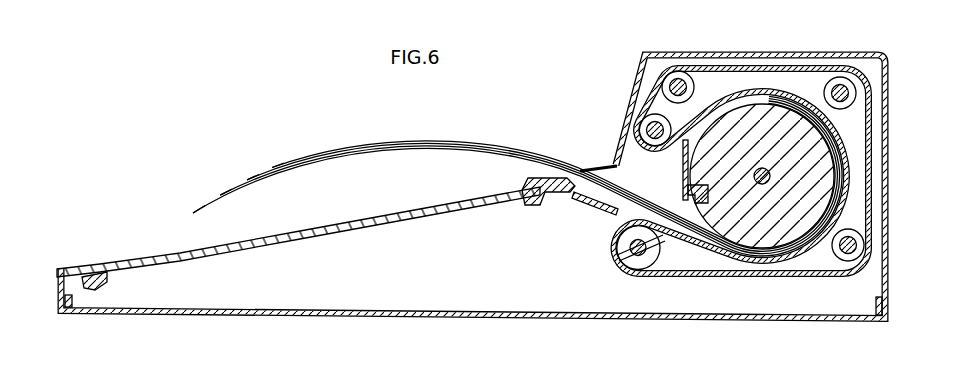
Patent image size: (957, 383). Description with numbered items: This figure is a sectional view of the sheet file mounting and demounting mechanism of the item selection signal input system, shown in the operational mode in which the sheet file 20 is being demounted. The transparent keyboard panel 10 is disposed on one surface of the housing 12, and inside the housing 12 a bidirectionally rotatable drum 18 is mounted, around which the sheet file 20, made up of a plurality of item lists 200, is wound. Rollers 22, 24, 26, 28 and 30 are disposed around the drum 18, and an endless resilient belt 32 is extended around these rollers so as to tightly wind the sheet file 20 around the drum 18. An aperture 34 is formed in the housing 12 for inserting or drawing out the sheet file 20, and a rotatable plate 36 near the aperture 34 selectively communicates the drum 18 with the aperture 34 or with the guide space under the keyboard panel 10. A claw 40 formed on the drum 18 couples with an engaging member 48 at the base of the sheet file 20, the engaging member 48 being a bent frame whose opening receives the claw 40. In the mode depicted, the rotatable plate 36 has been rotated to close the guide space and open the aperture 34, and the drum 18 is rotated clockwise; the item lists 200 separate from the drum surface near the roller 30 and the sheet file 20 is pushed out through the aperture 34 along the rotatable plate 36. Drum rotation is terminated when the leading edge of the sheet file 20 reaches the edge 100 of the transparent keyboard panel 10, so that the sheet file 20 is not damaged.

The transparent keyboard panel 10 is at (376, 218).
The housing 12 is at (77, 267).
The edge of the transparent keyboard panel 100 is at (108, 270).
The item lists 200 is at (212, 212).
The sheet file 20 is at (503, 150).
The bidirectionally rotatable drum 18 is at (868, 112).
The roller 22 is at (636, 110).
The roller 24 is at (686, 70).
The roller 26 is at (845, 72).
The roller 28 is at (863, 236).
The roller 30 is at (614, 262).
The endless resilient belt 32 is at (870, 180).
The aperture 34 is at (600, 166).
The rotatable plate 36 is at (583, 212).
The claw 40 is at (702, 188).
The engaging member 48 is at (698, 163).